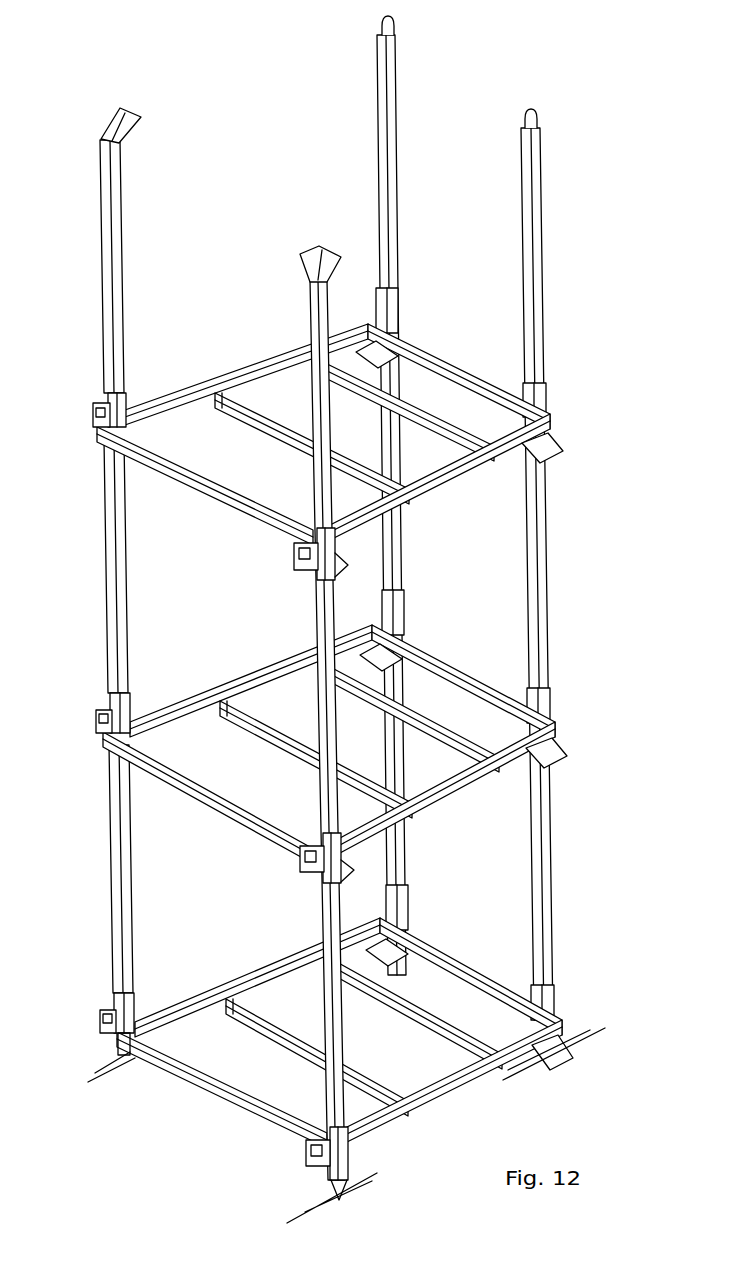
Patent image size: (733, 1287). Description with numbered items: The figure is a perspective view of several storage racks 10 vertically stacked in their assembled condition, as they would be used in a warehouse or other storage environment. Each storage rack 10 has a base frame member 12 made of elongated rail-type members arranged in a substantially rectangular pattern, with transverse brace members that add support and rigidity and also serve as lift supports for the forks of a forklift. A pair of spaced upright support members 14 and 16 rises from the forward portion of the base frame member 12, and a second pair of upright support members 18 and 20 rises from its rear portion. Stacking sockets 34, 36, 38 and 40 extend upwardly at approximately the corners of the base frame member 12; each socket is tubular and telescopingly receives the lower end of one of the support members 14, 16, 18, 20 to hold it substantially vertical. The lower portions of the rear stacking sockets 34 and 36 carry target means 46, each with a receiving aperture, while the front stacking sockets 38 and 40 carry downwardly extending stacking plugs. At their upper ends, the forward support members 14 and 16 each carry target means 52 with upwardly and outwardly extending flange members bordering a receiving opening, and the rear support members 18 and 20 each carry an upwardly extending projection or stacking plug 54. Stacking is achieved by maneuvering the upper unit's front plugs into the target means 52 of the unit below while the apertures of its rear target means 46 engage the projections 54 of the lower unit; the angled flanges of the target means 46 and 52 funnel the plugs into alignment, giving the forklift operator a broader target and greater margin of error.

The storage rack 10 is at (332, 607).
The base frame member 12 is at (206, 509).
The upright support member 14 is at (120, 222).
The upright support member 16 is at (312, 480).
The upright support member 18 is at (395, 112).
The upright support member 20 is at (540, 220).
The stacking socket 34 is at (400, 323).
The stacking socket 36 is at (548, 405).
The stacking socket 38 is at (126, 408).
The stacking socket 40 is at (336, 549).
The target means 46 is at (564, 446).
The target means 52 is at (136, 111).
The projection or stacking plug 54 is at (392, 27).